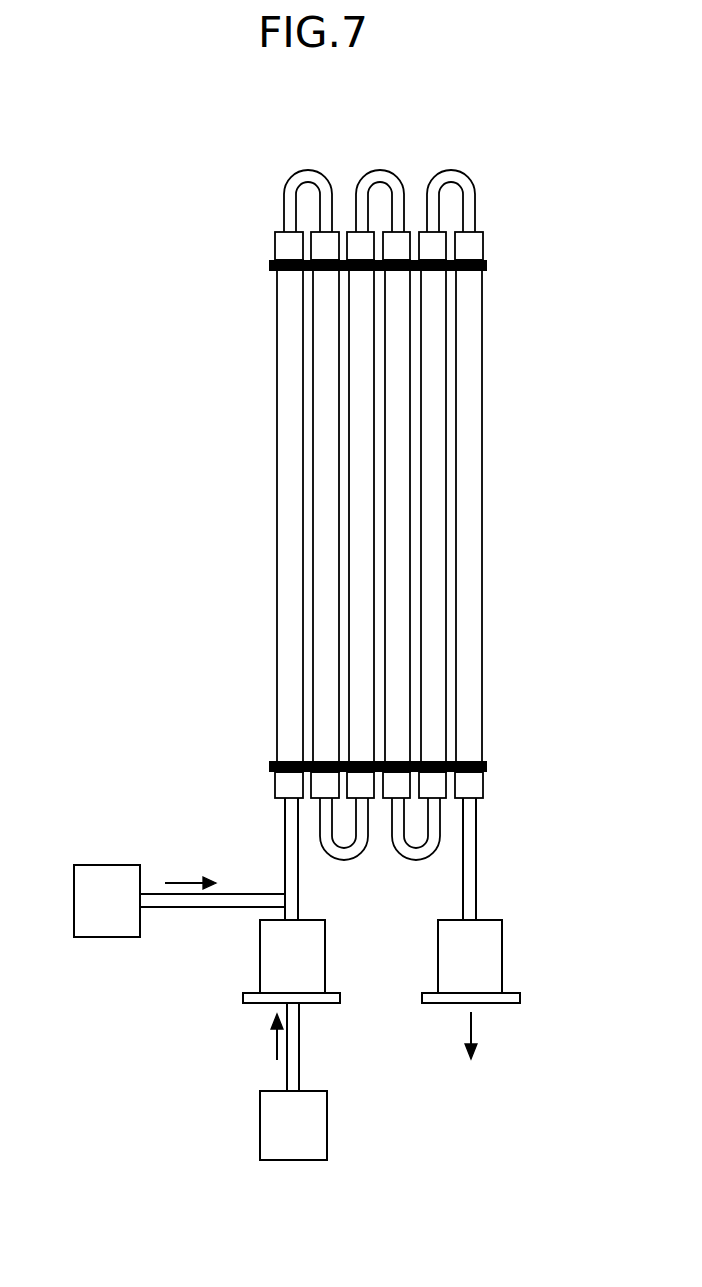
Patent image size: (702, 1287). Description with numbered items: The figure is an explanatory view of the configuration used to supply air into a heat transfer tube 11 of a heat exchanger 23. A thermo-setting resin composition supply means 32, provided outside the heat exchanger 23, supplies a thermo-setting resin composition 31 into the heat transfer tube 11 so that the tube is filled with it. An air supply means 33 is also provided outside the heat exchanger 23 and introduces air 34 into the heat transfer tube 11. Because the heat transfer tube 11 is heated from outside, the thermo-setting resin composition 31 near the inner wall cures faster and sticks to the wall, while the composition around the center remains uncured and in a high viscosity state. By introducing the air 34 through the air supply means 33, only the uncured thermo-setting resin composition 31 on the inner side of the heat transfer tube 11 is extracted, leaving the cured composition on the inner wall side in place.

The heat exchanger 23 is at (508, 178).
The heat transfer tube 11 is at (477, 831).
The air supply means 33 is at (108, 865).
The air 34 is at (185, 881).
The thermo-setting resin composition 31 is at (475, 1027).
The thermo-setting resin composition supply means 32 is at (260, 1124).